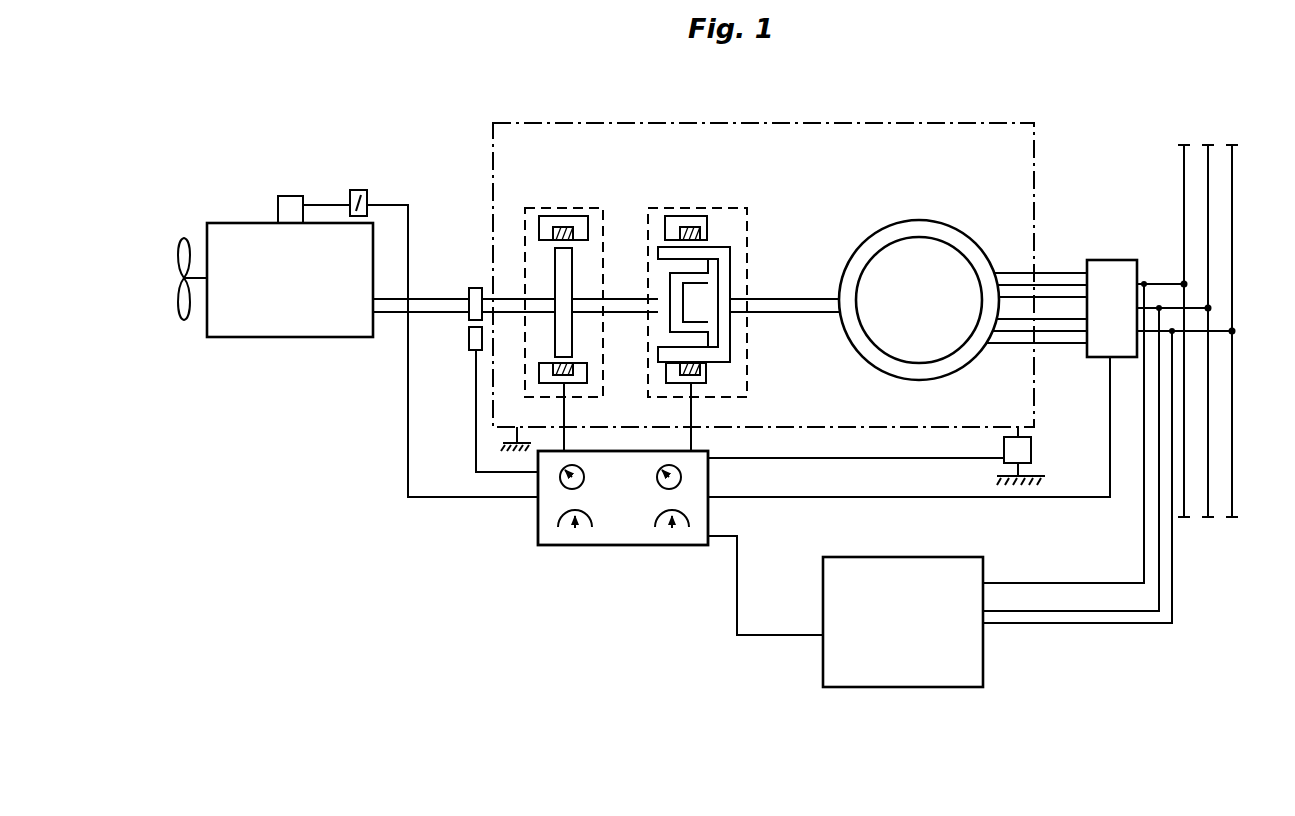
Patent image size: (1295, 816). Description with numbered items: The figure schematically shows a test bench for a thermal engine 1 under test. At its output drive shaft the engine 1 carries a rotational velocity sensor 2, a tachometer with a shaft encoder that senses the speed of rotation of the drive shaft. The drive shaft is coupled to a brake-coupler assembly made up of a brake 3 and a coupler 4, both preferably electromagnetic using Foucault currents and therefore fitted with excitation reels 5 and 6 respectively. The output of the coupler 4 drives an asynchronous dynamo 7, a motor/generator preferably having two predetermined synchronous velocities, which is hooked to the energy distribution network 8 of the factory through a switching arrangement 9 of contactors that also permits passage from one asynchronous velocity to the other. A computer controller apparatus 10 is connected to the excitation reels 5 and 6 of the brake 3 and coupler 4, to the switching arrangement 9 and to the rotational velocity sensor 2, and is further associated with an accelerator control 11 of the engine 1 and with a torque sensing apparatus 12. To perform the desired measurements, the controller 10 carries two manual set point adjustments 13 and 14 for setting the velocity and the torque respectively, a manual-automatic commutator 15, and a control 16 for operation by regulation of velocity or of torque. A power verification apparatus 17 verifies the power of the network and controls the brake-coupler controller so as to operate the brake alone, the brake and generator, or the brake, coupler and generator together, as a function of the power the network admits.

The thermal engine 1 is at (292, 341).
The rotational velocity sensor 2 is at (477, 286).
The brake 3 is at (567, 206).
The coupler 4 is at (706, 206).
The excitation reel 5 is at (556, 226).
The excitation reel 6 is at (683, 226).
The asynchronous dynamo 7 is at (929, 218).
The energy distribution network 8 is at (1238, 192).
The switching arrangement 9 is at (1104, 258).
The computer controller apparatus 10 is at (632, 549).
The accelerator control 11 is at (360, 188).
The torque sensing apparatus 12 is at (1033, 449).
The manual set point adjustment 13 is at (561, 486).
The manual set point adjustment 14 is at (680, 485).
The manual-automatic commutator 15 is at (570, 528).
The control 16 is at (687, 524).
The power verification apparatus 17 is at (943, 556).